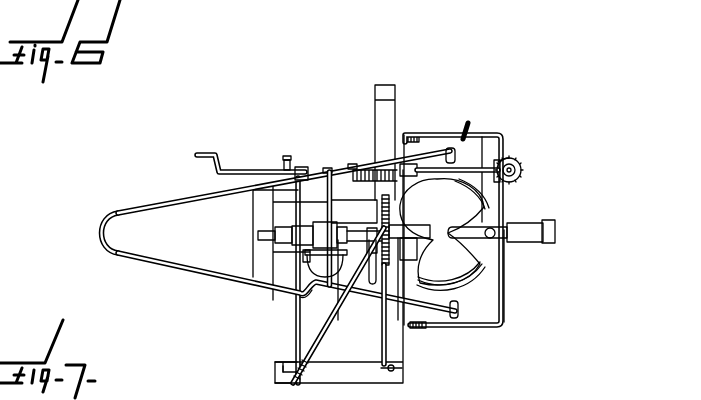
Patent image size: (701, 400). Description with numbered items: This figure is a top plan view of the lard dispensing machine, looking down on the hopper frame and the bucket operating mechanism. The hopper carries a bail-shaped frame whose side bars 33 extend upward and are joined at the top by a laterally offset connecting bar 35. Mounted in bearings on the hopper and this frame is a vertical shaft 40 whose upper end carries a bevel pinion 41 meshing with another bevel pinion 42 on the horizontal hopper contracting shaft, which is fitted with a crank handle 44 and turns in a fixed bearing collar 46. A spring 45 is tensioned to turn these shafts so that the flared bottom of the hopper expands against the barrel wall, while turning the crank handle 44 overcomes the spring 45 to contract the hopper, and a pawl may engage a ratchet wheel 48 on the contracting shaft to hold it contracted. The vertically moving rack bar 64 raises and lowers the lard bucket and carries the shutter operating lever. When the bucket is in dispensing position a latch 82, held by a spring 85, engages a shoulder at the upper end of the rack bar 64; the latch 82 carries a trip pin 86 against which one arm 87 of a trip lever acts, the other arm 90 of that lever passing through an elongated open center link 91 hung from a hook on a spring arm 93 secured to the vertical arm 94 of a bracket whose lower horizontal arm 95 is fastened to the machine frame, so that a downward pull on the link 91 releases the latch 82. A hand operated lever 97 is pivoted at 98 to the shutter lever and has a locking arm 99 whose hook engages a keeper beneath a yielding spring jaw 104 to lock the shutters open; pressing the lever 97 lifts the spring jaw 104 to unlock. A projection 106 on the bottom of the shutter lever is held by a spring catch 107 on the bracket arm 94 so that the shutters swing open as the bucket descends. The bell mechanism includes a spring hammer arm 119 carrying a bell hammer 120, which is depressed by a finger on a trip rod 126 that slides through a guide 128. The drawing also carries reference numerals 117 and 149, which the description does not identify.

The side bars 33 is at (438, 135).
The connecting bar 35 is at (505, 291).
The vertical shaft 40 is at (523, 165).
The bevel pinion 41 is at (524, 178).
The bevel pinion 42 is at (499, 161).
The crank handle 44 is at (205, 151).
The spring 45 is at (243, 170).
The fixed bearing collar 46 is at (410, 163).
The ratchet wheel 48 is at (289, 156).
The rack bar 64 is at (333, 224).
The latch 82 is at (296, 258).
The spring 85 is at (257, 236).
The trip pin 86 is at (310, 276).
The lever arm 87 is at (309, 289).
The lever arm 90 is at (390, 260).
The open center link 91 is at (387, 214).
The spring arm 93 is at (313, 347).
The vertical bracket arm 94 is at (274, 375).
The horizontal bracket arm 95 is at (412, 368).
The hand operated lever 97 is at (129, 211).
The pivot 98 is at (305, 168).
The locking arm 99 is at (341, 283).
The spring jaw 104 is at (374, 286).
The projection 106 is at (296, 325).
The spring catch 107 is at (289, 362).
The cam rim 117 is at (473, 277).
The spring arm 119 is at (502, 216).
The bell hammer 120 is at (495, 237).
The trip rod 126 is at (556, 230).
The guide 128 is at (555, 240).
The pin 149 is at (469, 121).